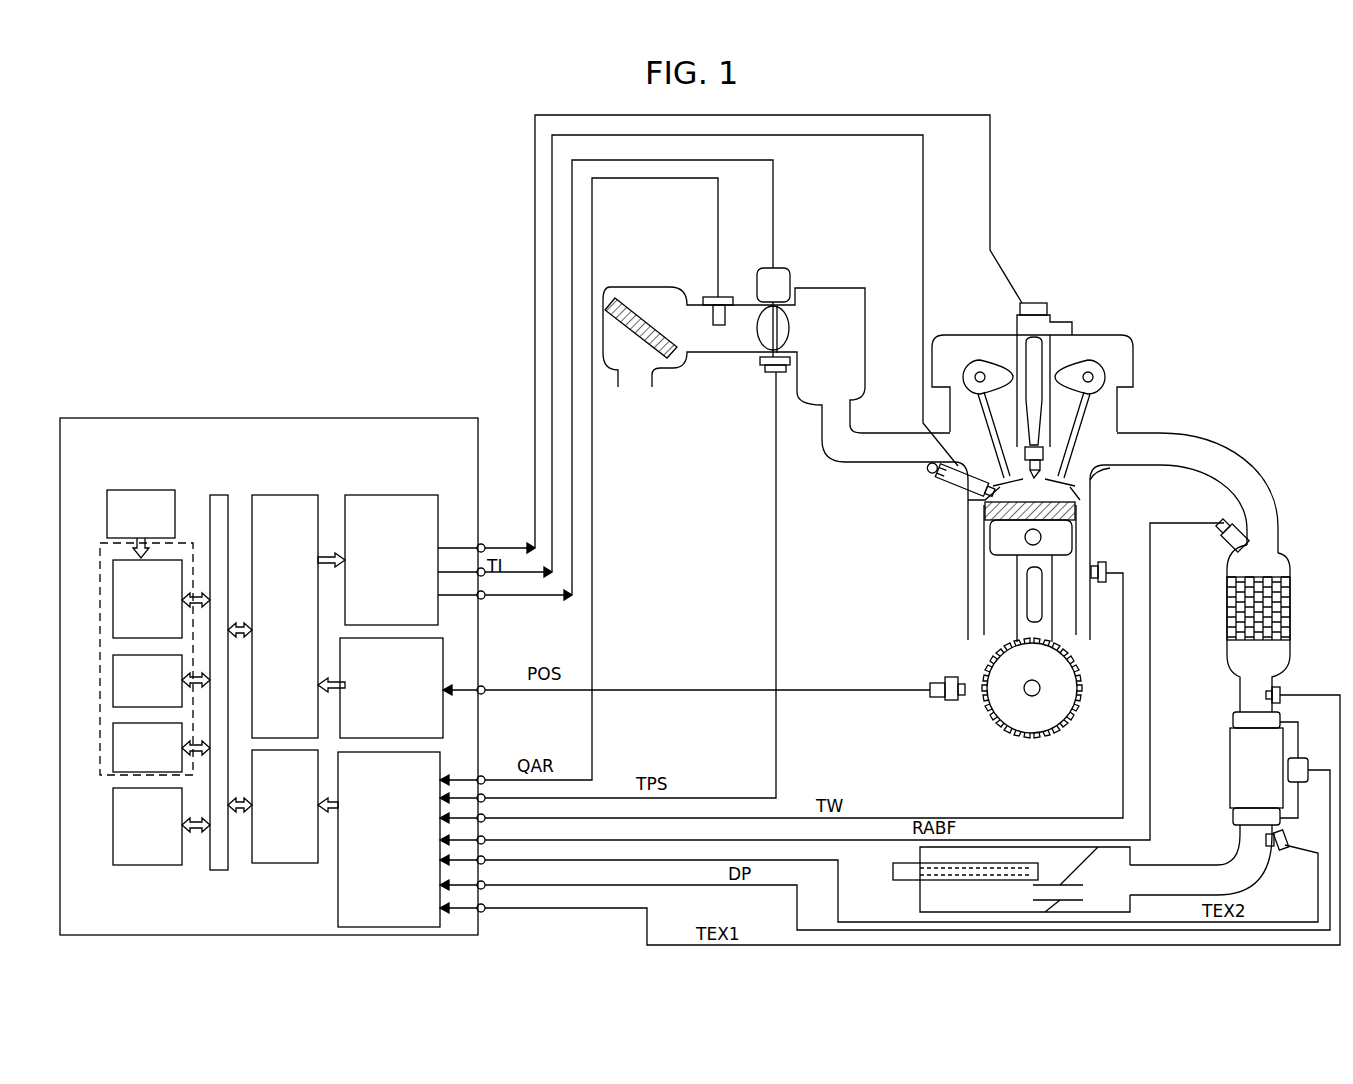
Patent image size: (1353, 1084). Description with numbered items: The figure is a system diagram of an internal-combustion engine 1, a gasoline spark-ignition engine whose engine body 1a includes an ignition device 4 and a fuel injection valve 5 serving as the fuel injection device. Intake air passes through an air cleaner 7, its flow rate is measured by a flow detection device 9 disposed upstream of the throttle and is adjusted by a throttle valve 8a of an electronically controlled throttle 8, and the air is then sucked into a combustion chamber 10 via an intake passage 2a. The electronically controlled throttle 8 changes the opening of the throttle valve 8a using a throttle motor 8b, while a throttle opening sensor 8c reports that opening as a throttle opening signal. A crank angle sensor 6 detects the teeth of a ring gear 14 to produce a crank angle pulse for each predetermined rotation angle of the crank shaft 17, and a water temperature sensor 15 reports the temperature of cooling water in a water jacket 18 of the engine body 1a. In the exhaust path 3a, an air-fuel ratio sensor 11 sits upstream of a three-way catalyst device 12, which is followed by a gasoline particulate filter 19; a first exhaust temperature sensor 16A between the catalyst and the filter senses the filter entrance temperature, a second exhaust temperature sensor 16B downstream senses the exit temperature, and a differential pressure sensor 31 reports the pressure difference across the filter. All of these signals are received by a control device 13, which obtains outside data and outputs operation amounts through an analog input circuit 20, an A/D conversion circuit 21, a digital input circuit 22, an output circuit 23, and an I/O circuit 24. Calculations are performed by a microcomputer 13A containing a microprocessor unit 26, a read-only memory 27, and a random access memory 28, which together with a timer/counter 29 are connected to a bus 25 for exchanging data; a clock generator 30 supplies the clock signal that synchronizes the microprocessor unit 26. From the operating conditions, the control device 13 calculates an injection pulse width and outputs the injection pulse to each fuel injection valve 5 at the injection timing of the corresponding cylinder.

The internal-combustion engine 1 is at (1158, 226).
The engine body 1a is at (1133, 365).
The intake passage 2a is at (893, 458).
The exhaust path 3a is at (1212, 463).
The ignition device 4 is at (1052, 305).
The fuel injection valve 5 is at (955, 492).
The crank angle sensor 6 is at (936, 677).
The air cleaner 7 is at (642, 305).
The electronically controlled throttle 8 is at (772, 319).
The throttle valve 8a is at (766, 340).
The throttle motor 8b is at (790, 275).
The throttle opening sensor 8c is at (766, 372).
The flow detection device 9 is at (712, 297).
The combustion chamber 10 is at (1100, 488).
The air-fuel ratio sensor 11 is at (1224, 523).
The three-way catalyst device 12 is at (1294, 614).
The control device 13 is at (256, 420).
The microcomputer 13A is at (100, 543).
The ring gear 14 is at (1020, 715).
The water temperature sensor 15 is at (1106, 585).
The first exhaust temperature sensor 16A is at (1282, 688).
The second exhaust temperature sensor 16B is at (1282, 850).
The crank shaft 17 is at (1040, 695).
The water jacket 18 is at (1085, 535).
The gasoline particulate filter 19 is at (1230, 745).
The analog input circuit 20 is at (338, 884).
The A/D conversion circuit 21 is at (276, 865).
The digital input circuit 22 is at (443, 660).
The output circuit 23 is at (376, 495).
The I/O circuit 24 is at (278, 495).
The bus 25 is at (212, 495).
The microprocessor unit 26 is at (113, 600).
The read-only memory 27 is at (113, 684).
The random access memory 28 is at (113, 750).
The timer/counter 29 is at (113, 828).
The clock generator 30 is at (136, 490).
The differential pressure sensor 31 is at (1300, 758).